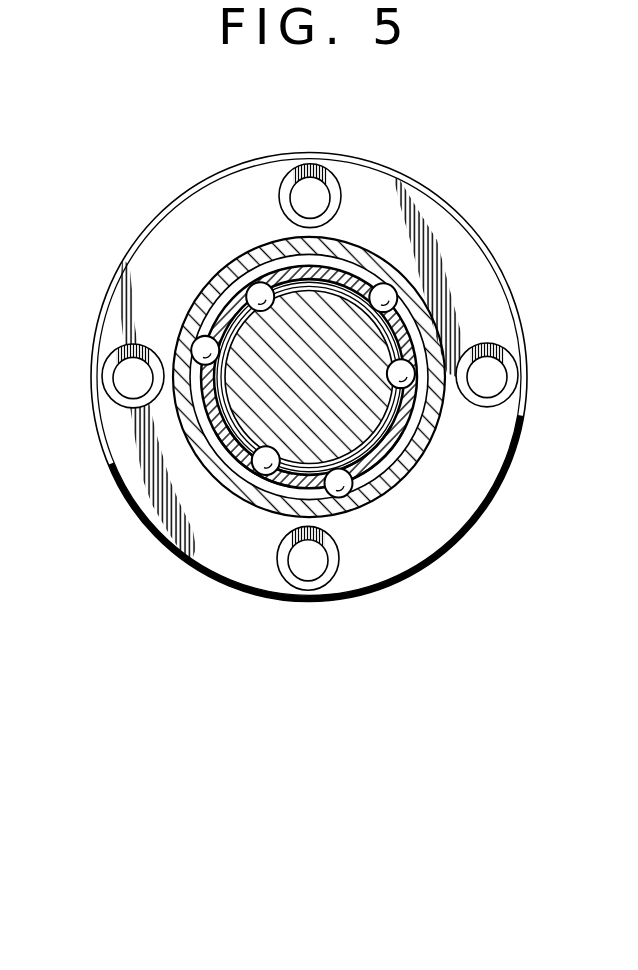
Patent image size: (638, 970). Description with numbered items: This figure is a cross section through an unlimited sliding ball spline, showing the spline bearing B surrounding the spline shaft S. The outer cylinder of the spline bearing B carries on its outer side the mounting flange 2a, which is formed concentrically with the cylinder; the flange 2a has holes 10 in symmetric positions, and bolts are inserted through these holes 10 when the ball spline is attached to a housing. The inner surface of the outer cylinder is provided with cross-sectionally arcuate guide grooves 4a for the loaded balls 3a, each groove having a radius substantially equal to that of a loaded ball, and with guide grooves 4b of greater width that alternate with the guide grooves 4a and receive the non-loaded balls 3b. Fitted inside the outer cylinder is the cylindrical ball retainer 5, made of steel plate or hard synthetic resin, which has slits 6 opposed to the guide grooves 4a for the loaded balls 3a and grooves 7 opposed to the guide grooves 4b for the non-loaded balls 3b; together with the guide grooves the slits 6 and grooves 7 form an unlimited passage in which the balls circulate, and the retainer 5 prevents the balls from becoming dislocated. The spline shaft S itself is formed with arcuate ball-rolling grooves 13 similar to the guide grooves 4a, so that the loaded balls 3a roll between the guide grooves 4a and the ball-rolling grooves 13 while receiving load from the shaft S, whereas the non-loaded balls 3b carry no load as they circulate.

The mounting flange 2a is at (309, 358).
The holes 10 is at (306, 386).
The spline bearing B is at (332, 328).
The loaded balls 3a is at (243, 214).
The non-loaded balls 3b is at (133, 314).
The guide grooves 4a is at (214, 521).
The guide grooves 4b is at (424, 507).
The ball retainer 5 is at (174, 483).
The slits 6 is at (471, 330).
The grooves 7 is at (443, 257).
The spline shaft S is at (391, 392).
The ball-rolling grooves 13 is at (309, 376).